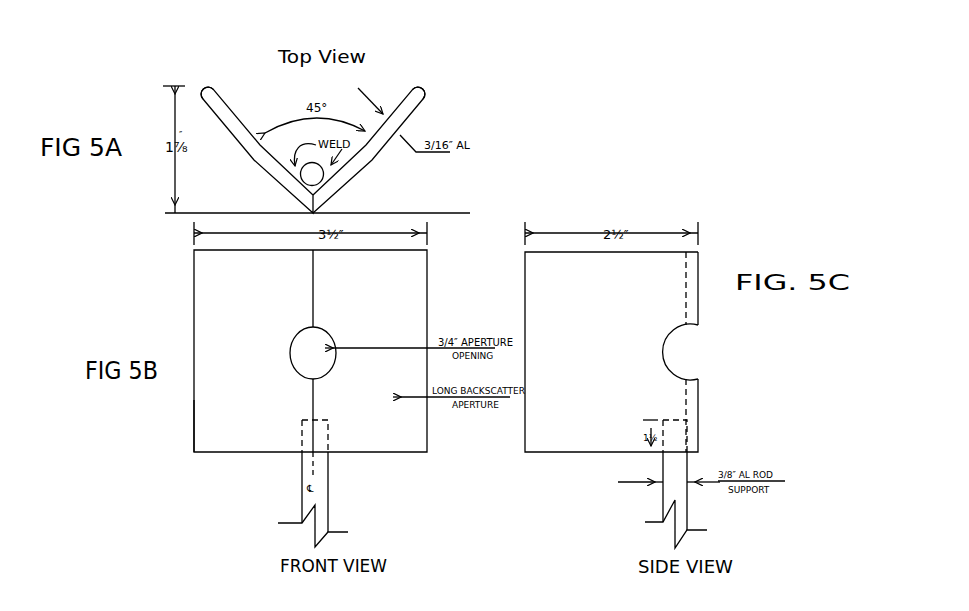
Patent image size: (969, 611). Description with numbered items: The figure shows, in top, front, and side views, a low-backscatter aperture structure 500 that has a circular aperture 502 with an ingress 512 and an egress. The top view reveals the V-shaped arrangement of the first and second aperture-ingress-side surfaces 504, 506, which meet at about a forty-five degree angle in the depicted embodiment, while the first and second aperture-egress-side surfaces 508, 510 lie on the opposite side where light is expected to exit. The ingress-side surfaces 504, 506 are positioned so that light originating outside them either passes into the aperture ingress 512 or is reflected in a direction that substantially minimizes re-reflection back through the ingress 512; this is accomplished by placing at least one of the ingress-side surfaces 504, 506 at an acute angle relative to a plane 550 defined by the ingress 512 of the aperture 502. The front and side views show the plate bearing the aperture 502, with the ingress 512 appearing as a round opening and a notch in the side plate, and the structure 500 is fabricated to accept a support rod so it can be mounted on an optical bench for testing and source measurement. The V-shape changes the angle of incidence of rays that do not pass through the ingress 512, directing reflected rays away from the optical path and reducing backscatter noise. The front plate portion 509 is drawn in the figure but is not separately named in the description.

In FIG. 5A, the low-backscatter aperture structure 500 is at (377, 128).
In FIG. 5B, the low-backscatter aperture structure 500 is at (230, 415).
In FIG. 5C, the low-backscatter aperture structure 500 is at (710, 332).
In FIG. 5C, the circular aperture 502 is at (713, 375).
In FIG. 5A, the first aperture-ingress-side surface 504 is at (258, 160).
In FIG. 5C, the first aperture-ingress-side surface 504 is at (595, 282).
In FIG. 5A, the second aperture-ingress-side surface 506 is at (358, 168).
In FIG. 5B, the second aperture-ingress-side surface 506 is at (412, 280).
In FIG. 5A, the first aperture-egress-side surface 508 is at (218, 98).
In FIG. 5B, the front plate 509 is at (283, 278).
In FIG. 5A, the second aperture-egress-side surface 510 is at (417, 88).
In FIG. 5B, the second aperture-egress-side surface 510 is at (268, 377).
In FIG. 5B, the aperture ingress 512 is at (313, 328).
In FIG. 5C, the aperture ingress 512 is at (700, 324).
In FIG. 5A, the plane 550 is at (463, 212).